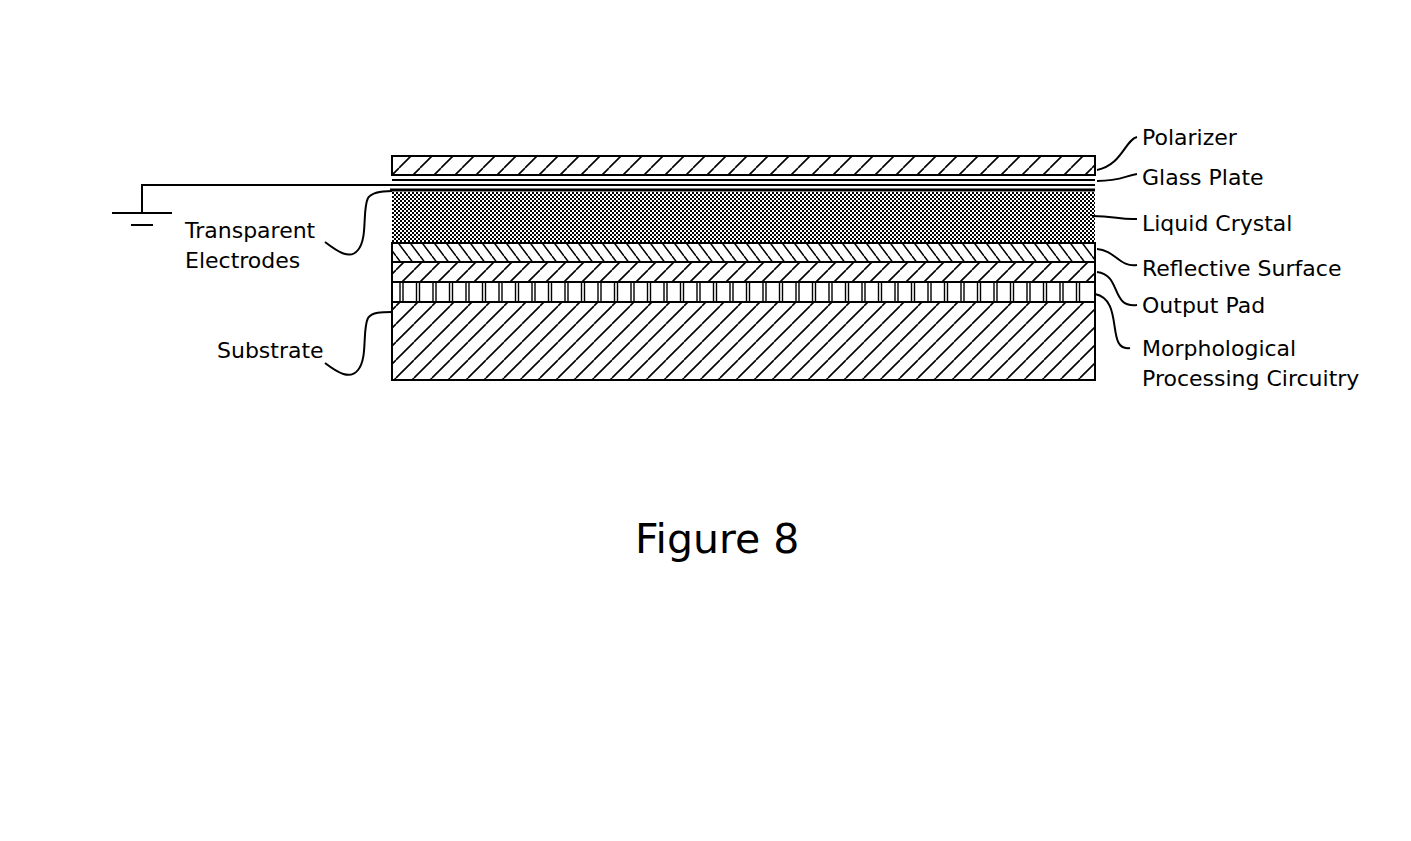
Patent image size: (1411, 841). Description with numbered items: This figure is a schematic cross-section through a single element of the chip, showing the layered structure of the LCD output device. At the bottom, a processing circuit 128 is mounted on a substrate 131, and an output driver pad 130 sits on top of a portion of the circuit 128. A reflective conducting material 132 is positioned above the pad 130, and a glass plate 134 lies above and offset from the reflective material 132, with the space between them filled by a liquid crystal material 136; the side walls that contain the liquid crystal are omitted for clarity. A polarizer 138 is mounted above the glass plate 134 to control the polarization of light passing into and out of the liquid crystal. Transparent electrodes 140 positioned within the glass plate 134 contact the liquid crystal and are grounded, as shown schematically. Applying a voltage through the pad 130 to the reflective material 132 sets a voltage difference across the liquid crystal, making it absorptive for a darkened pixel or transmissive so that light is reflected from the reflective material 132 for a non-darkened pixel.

The processing circuit 128 is at (392, 295).
The output driver pad 130 is at (392, 270).
The substrate 131 is at (395, 371).
The reflective conducting material 132 is at (556, 256).
The glass plate 134 is at (394, 189).
The liquid crystal material 136 is at (482, 220).
The polarizer 138 is at (397, 168).
The transparent electrodes 140 is at (219, 184).